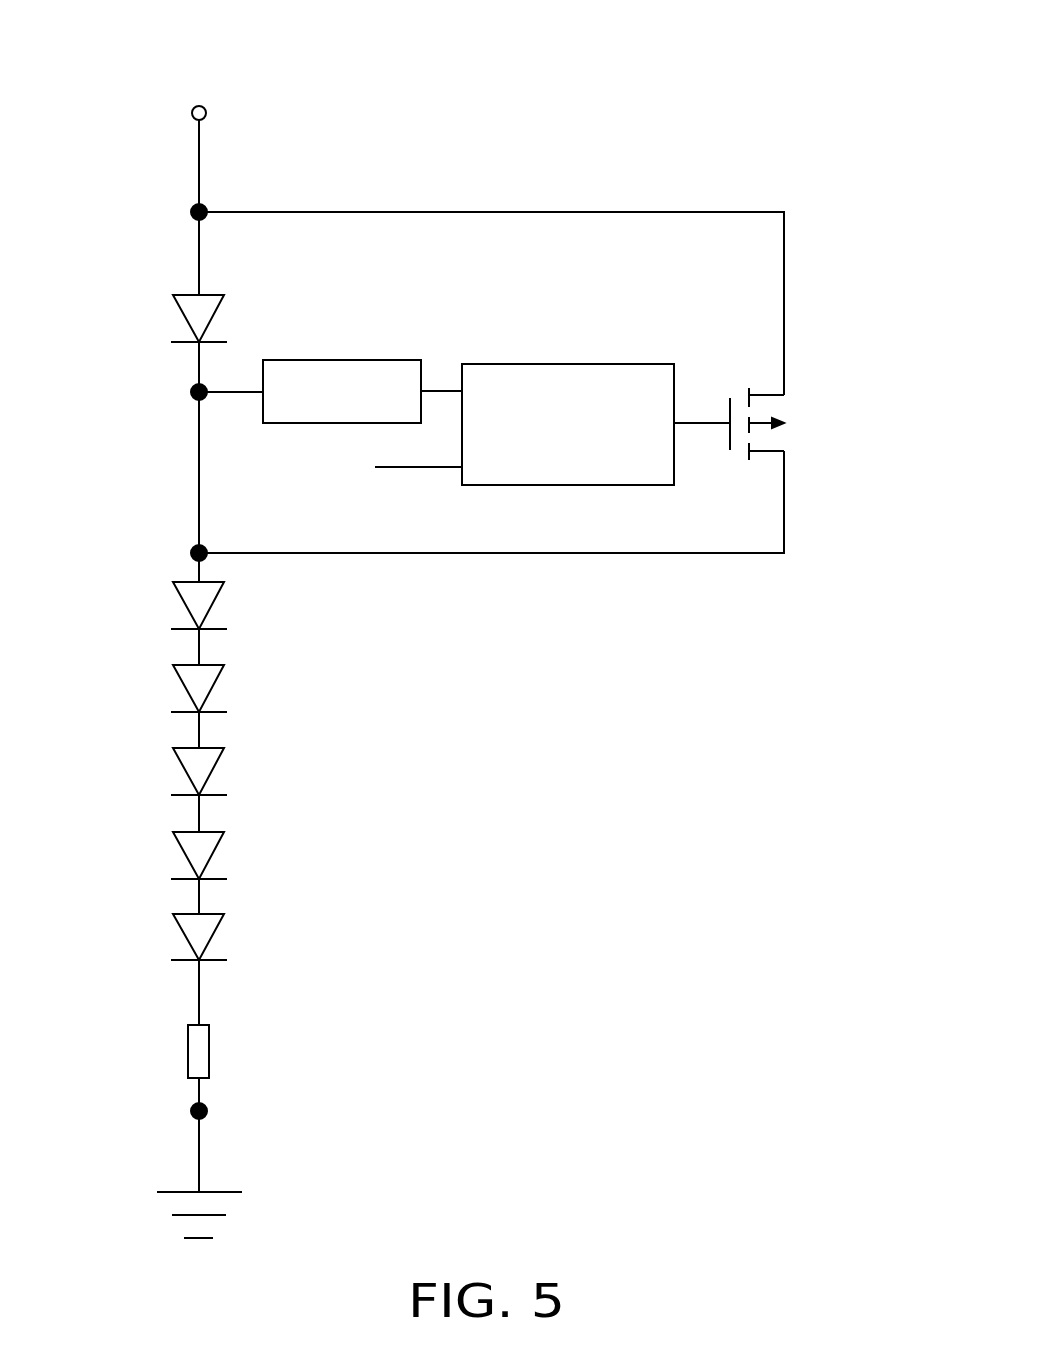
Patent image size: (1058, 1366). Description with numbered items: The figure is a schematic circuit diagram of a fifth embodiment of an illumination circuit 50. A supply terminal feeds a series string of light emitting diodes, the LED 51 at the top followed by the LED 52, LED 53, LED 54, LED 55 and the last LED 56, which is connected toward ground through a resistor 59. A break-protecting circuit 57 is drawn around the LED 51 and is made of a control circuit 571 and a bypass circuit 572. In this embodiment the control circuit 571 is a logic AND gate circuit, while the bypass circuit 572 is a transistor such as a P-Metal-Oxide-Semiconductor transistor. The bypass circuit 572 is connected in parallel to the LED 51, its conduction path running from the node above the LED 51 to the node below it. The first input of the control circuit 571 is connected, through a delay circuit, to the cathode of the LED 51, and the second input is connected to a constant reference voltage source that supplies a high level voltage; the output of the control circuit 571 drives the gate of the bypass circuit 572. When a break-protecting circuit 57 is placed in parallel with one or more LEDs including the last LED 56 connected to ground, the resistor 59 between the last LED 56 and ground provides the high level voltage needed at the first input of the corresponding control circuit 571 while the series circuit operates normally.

The illumination circuit 50 is at (470, 38).
The LED 51 is at (187, 321).
The LED 52 is at (188, 609).
The LED 53 is at (187, 687).
The LED 54 is at (187, 769).
The LED 55 is at (187, 855).
The last LED 56 is at (187, 935).
The break-protecting circuit 57 is at (620, 188).
The control circuit 571 is at (587, 364).
The bypass circuit 572 is at (760, 421).
The resistor 59 is at (197, 1046).